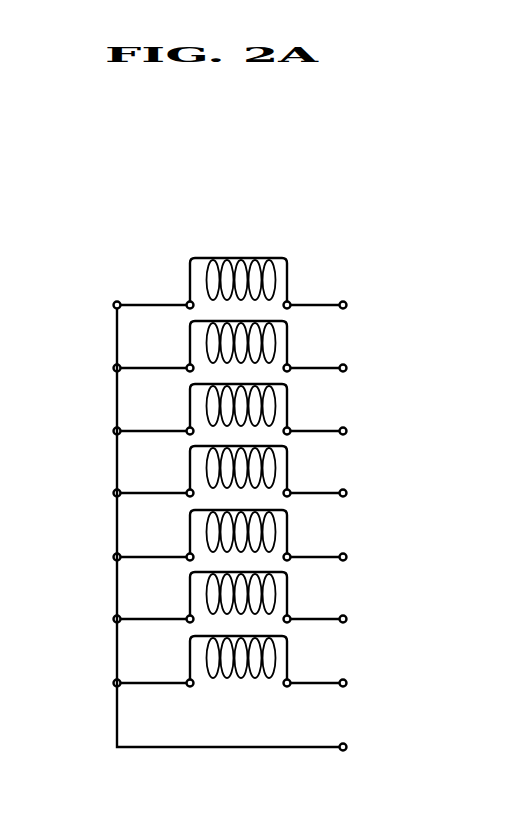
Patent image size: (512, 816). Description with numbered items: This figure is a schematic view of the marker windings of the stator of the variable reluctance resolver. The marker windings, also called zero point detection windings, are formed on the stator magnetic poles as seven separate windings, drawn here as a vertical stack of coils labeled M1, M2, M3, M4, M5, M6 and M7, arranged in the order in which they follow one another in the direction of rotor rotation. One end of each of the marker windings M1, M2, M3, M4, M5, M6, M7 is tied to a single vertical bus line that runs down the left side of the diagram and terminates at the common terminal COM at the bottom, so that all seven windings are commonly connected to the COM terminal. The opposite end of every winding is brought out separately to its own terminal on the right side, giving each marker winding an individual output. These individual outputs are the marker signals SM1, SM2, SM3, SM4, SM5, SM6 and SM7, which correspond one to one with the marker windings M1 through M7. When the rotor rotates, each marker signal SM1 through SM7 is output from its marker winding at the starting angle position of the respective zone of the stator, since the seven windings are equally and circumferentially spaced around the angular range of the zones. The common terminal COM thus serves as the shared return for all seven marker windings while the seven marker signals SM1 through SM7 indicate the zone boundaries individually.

The marker winding M1 is at (182, 280).
The marker winding M2 is at (182, 343).
The marker winding M3 is at (182, 407).
The marker winding M4 is at (182, 473).
The marker winding M5 is at (182, 529).
The marker winding M6 is at (182, 595).
The marker winding M7 is at (182, 657).
The marker signal SM1 is at (369, 305).
The marker signal SM2 is at (369, 368).
The marker signal SM3 is at (369, 431).
The marker signal SM4 is at (369, 493).
The marker signal SM5 is at (369, 557).
The marker signal SM6 is at (369, 619).
The marker signal SM7 is at (369, 683).
The common terminal COM is at (282, 535).